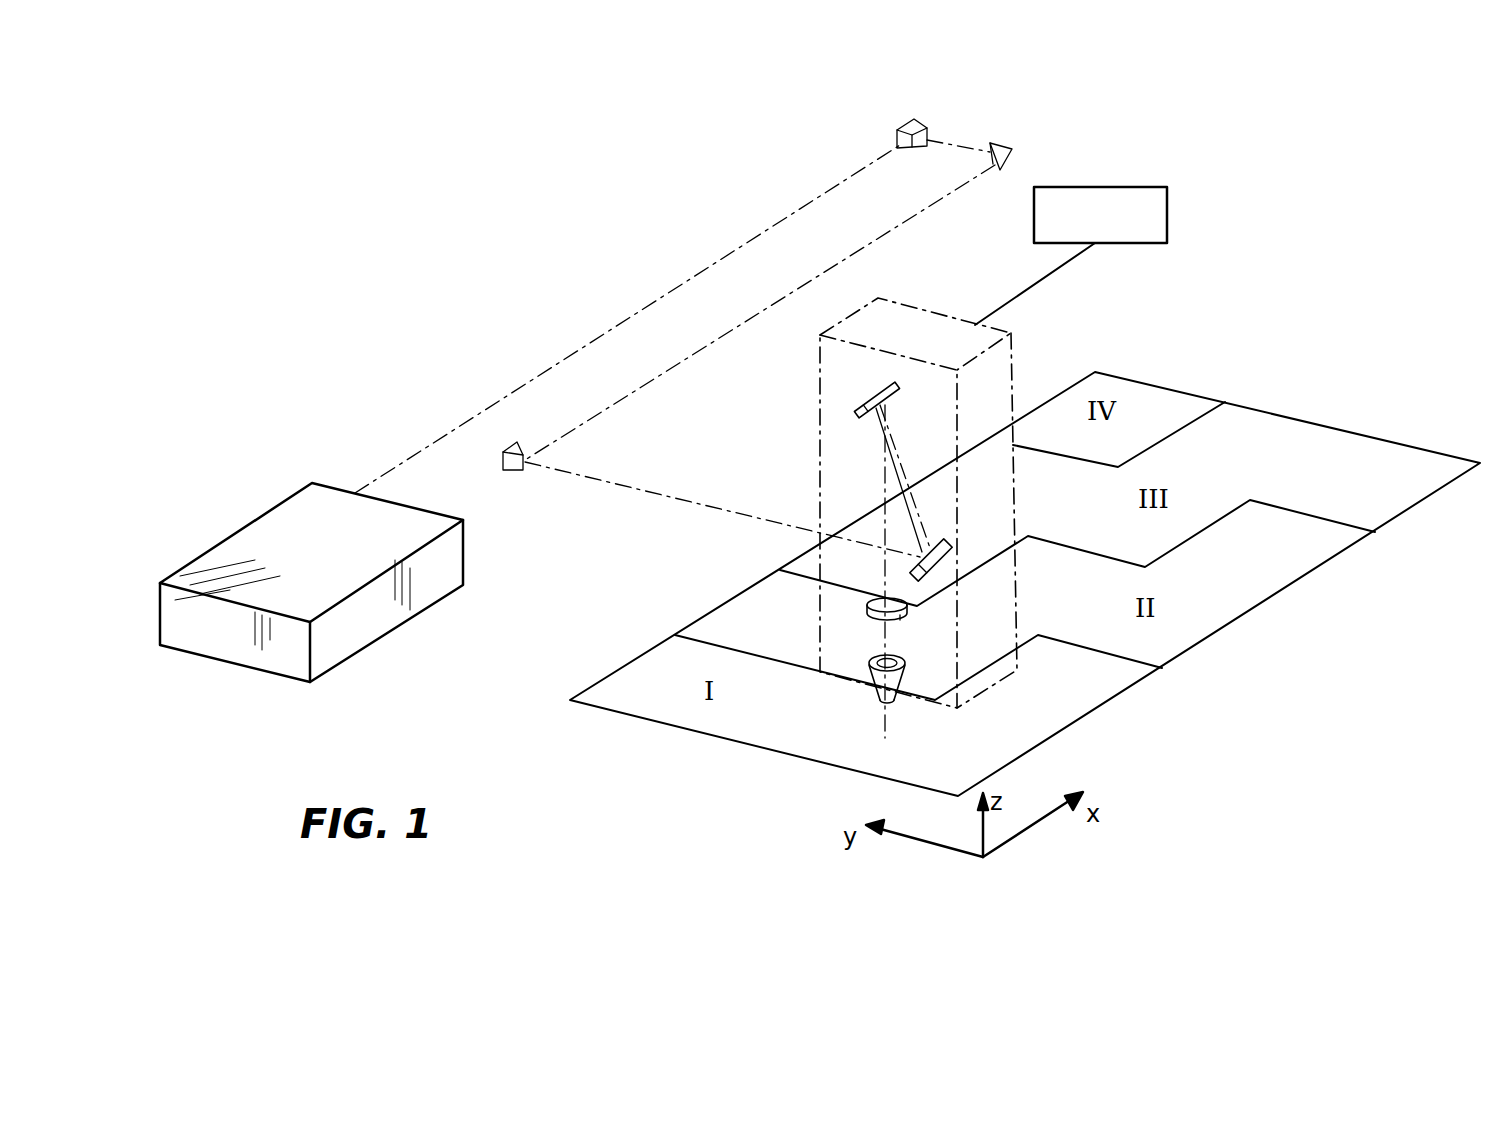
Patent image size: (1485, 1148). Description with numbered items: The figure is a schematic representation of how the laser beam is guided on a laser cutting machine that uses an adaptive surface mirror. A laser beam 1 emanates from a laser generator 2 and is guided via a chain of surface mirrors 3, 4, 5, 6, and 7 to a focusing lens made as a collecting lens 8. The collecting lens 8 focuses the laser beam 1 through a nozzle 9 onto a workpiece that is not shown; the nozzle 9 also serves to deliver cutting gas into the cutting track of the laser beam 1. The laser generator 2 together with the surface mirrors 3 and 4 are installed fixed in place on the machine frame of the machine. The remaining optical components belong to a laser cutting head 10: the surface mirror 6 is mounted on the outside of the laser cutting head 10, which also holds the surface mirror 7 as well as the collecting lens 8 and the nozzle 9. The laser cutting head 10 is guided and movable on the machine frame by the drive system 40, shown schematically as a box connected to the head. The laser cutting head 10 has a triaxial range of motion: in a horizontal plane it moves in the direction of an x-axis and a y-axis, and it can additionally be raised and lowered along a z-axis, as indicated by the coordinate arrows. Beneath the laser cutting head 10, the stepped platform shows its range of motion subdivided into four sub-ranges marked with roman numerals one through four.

The laser beam 1 is at (541, 374).
The laser generator 2 is at (268, 540).
The surface mirror 3 is at (895, 141).
The surface mirror 4 is at (1012, 151).
The surface mirror 5 is at (513, 463).
The surface mirror 6 is at (938, 548).
The surface mirror 7 is at (872, 392).
The collecting lens 8 is at (870, 612).
The nozzle 9 is at (905, 667).
The laser cutting head 10 is at (985, 387).
The drive system 40 is at (1168, 210).